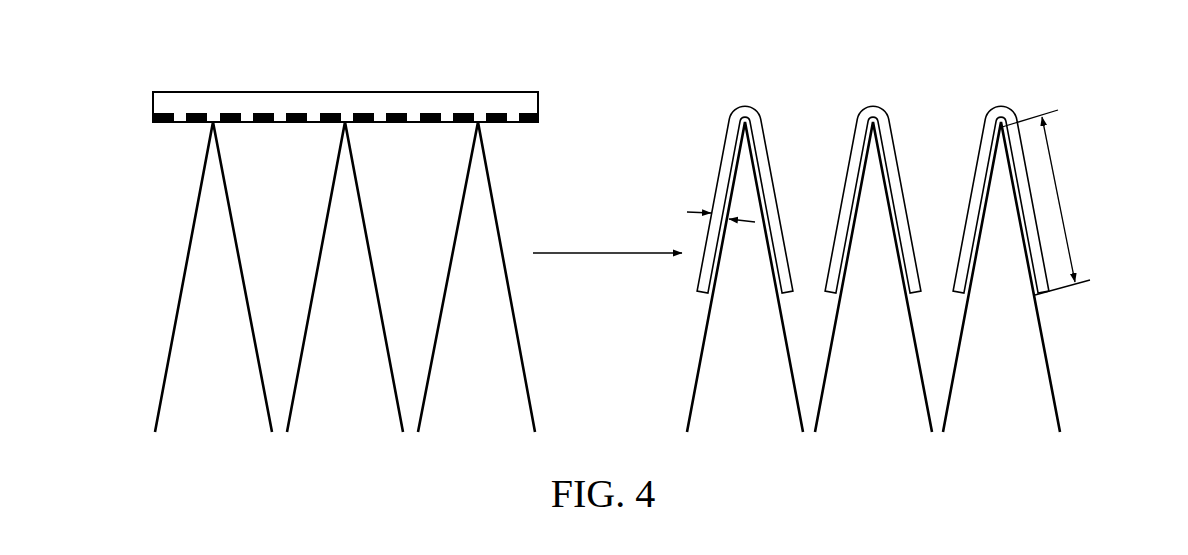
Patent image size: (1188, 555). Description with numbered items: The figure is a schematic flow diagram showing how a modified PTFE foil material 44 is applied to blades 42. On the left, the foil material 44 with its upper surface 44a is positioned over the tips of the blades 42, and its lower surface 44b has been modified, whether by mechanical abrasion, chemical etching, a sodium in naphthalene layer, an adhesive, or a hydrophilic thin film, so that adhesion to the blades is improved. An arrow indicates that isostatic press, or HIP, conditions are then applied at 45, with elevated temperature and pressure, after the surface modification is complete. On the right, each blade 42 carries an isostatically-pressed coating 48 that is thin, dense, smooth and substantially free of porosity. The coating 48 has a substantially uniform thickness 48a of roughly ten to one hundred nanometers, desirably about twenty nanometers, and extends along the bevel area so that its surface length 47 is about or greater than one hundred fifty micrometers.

The blades 42 is at (607, 285).
The PTFE foil material 44 is at (327, 103).
The upper surface 44a is at (205, 92).
The lower surface 44b is at (172, 123).
The HIP conditions 45 is at (607, 239).
The surface length 47 is at (1063, 205).
The isostatically-pressed coating 48 is at (853, 175).
The thickness 48a is at (718, 216).